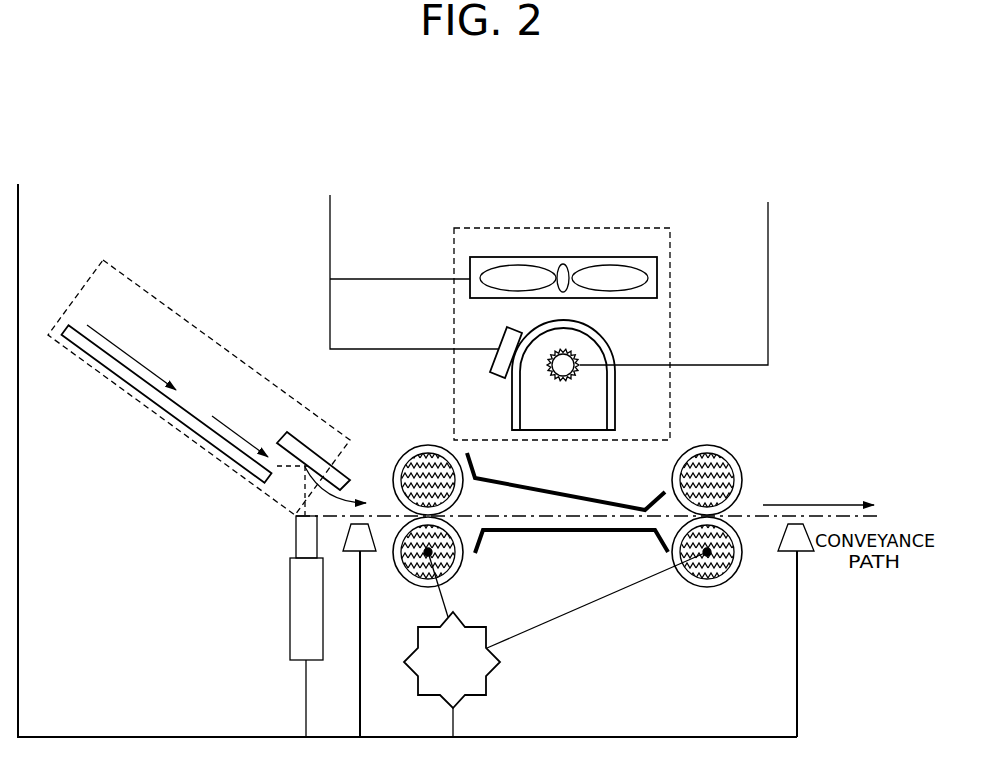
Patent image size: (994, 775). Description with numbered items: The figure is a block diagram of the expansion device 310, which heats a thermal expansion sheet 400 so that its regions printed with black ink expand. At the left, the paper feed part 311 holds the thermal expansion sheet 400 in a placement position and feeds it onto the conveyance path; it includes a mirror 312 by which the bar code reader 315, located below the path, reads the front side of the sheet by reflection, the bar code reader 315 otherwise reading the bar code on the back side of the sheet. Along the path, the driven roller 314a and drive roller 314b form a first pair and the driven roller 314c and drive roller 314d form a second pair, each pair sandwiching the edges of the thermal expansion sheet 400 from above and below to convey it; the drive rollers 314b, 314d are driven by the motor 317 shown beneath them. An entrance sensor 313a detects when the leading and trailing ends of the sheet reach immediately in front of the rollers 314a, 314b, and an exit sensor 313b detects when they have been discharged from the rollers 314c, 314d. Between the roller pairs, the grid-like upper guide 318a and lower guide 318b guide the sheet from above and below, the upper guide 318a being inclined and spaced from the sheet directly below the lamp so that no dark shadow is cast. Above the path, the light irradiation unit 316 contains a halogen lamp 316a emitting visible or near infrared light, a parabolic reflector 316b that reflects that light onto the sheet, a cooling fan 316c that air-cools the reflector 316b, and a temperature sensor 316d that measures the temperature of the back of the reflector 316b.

The expansion device 310 is at (622, 130).
The paper feed part 311 is at (117, 268).
The mirror 312 is at (307, 443).
The entrance sensor 313a is at (368, 553).
The exit sensor 313b is at (807, 553).
The driven roller 314a is at (423, 445).
The drive roller 314b is at (463, 562).
The driven roller 314c is at (740, 467).
The drive roller 314d is at (705, 583).
The bar code reader 315 is at (291, 603).
The light irradiation unit 316 is at (494, 224).
The halogen lamp 316a is at (576, 358).
The reflector 316b is at (618, 392).
The cooling fan 316c is at (657, 281).
The temperature sensor 316d is at (502, 338).
The motor 317 is at (487, 683).
The upper guide 318a is at (527, 485).
The lower guide 318b is at (560, 535).
The thermal expansion sheet 400 is at (193, 412).